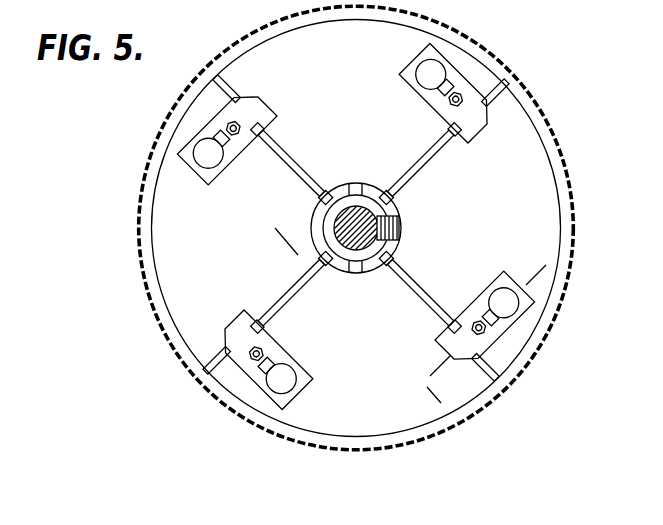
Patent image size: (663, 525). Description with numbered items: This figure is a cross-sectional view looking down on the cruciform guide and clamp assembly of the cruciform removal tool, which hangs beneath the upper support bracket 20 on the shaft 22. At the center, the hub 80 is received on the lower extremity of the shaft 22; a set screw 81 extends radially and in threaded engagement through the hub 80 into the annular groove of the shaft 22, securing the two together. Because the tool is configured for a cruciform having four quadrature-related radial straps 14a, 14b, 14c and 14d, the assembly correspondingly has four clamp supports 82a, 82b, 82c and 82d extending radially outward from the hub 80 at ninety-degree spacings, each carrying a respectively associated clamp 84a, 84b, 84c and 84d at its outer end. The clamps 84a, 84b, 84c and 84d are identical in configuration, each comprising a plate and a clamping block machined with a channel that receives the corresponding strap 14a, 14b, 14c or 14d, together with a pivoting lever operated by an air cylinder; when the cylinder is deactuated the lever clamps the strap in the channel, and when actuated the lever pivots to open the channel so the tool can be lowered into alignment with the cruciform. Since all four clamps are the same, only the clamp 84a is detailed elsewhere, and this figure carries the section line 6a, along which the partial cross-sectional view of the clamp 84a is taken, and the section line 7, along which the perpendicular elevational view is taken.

The upper support bracket 20 is at (524, 177).
The shaft 22 is at (358, 252).
The hub 80 is at (348, 272).
The set screw 81 is at (402, 228).
The clamp support 82a is at (436, 298).
The clamp support 82b is at (424, 165).
The clamp support 82c is at (291, 151).
The clamp support 82d is at (278, 300).
The clamp 84a is at (500, 270).
The clamp 84b is at (487, 120).
The clamp 84c is at (250, 97).
The clamp 84d is at (230, 322).
The strap 14a is at (512, 372).
The strap 14b is at (489, 80).
The strap 14c is at (229, 76).
The strap 14d is at (217, 357).
The section line 6a- 6a is at (537, 278).
The section line 7- 7 is at (298, 217).